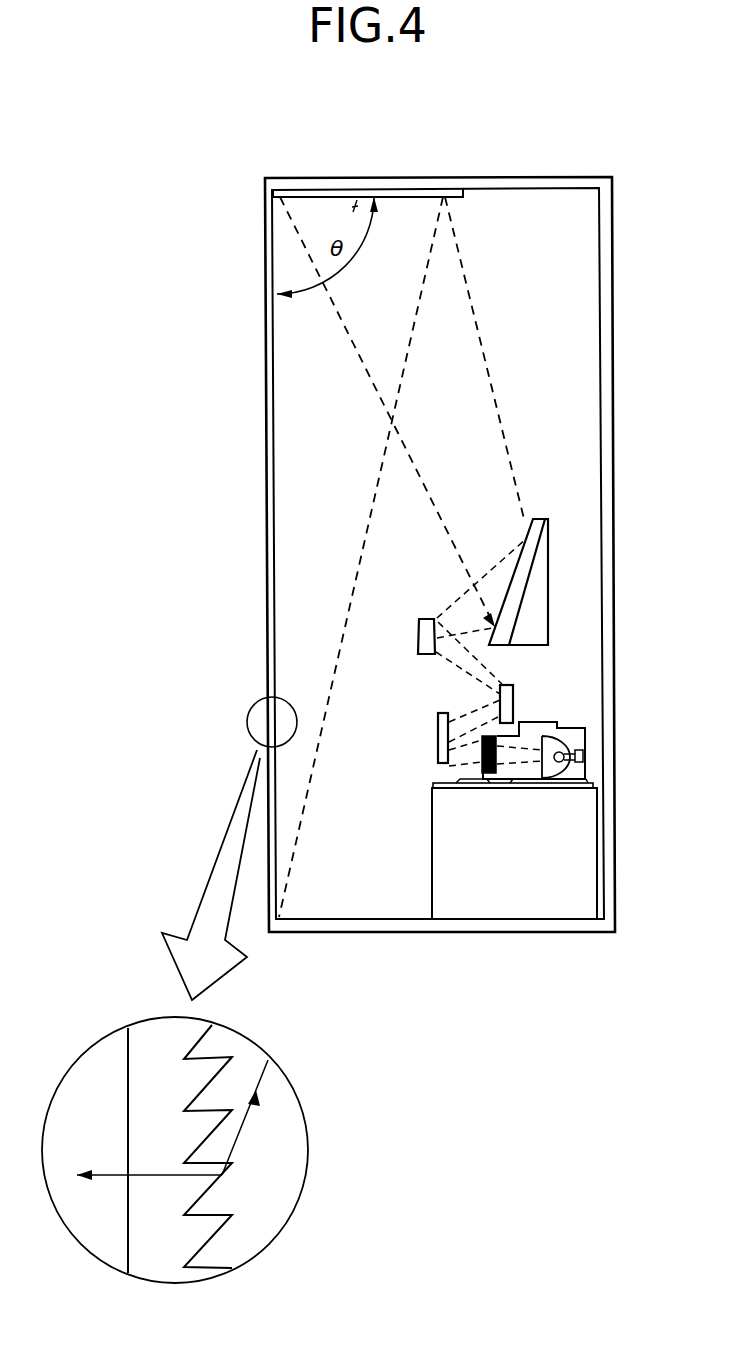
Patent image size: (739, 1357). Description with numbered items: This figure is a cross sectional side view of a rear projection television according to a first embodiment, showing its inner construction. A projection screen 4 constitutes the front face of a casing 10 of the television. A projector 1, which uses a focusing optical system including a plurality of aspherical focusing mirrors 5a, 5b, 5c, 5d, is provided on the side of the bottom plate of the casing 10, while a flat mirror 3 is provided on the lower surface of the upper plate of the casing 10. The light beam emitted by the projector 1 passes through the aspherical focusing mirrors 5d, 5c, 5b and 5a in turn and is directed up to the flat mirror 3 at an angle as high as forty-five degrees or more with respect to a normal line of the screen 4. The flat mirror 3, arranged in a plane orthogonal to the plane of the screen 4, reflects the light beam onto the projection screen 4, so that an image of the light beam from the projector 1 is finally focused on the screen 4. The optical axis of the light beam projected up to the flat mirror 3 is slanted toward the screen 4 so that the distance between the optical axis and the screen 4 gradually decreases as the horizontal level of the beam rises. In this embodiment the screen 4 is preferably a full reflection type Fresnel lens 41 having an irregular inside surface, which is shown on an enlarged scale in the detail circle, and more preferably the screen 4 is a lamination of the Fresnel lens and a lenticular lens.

The projector 1 is at (585, 736).
The flat mirror 3 is at (340, 188).
The projection screen 4 is at (266, 617).
The aspherical focusing mirror 5a is at (545, 597).
The aspherical focusing mirror 5b is at (418, 636).
The aspherical focusing mirror 5c is at (519, 699).
The aspherical focusing mirror 5d is at (438, 730).
The casing 10 is at (265, 377).
The full reflection type Fresnel lens 41 is at (158, 1267).